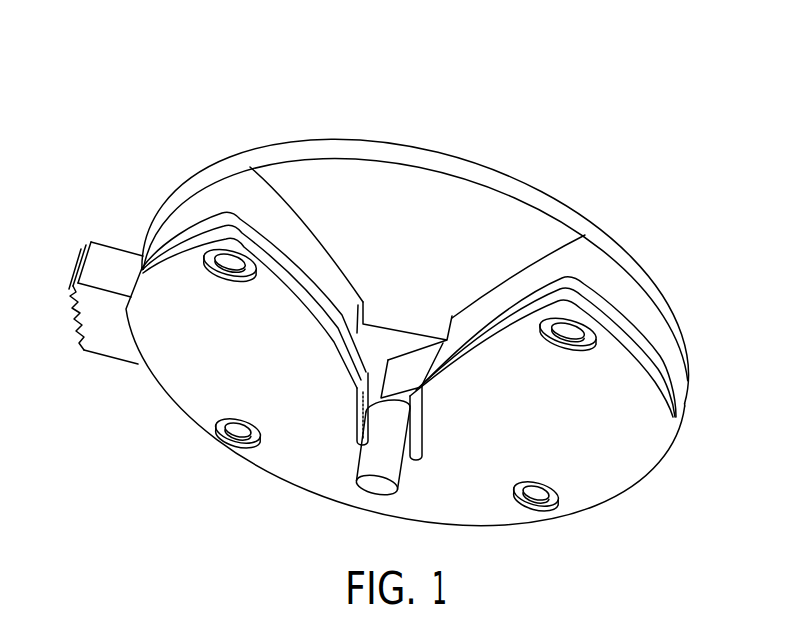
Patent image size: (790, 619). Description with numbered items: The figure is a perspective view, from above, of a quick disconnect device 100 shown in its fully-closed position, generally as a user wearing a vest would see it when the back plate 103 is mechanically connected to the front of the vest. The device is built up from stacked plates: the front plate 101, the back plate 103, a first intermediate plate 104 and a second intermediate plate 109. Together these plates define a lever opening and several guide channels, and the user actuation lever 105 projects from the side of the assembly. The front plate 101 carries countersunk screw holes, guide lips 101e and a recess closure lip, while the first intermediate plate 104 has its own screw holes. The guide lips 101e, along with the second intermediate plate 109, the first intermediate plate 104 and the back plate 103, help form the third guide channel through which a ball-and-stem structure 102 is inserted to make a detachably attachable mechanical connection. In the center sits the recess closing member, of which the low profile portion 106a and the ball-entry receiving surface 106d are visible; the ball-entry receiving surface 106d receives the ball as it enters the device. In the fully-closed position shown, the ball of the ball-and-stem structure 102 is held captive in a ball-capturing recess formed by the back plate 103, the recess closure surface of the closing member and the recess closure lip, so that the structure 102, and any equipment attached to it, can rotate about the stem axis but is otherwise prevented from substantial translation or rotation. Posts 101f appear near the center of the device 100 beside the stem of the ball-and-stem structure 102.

The quick disconnect device 100 is at (147, 75).
The front plate 101 is at (626, 440).
The guide lips 101e is at (313, 267).
The post 101f is at (357, 414).
The ball-and-stem structure 102 is at (361, 471).
The back plate 103 is at (400, 142).
The first intermediate plate 104 is at (662, 337).
The user actuation lever 105 is at (111, 244).
The low profile portion 106a is at (388, 340).
The ball-entry receiving surface 106d is at (405, 365).
The second intermediate plate 109 is at (200, 202).